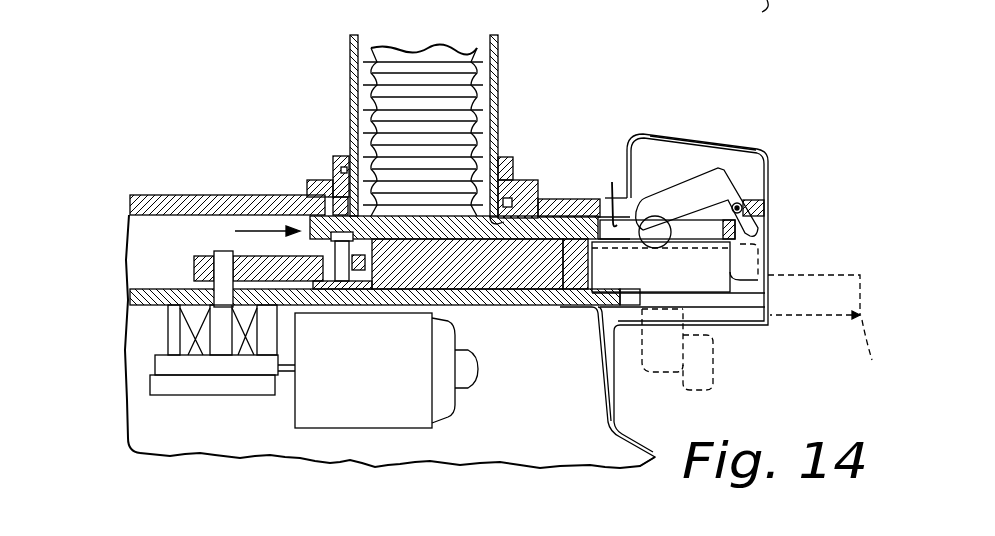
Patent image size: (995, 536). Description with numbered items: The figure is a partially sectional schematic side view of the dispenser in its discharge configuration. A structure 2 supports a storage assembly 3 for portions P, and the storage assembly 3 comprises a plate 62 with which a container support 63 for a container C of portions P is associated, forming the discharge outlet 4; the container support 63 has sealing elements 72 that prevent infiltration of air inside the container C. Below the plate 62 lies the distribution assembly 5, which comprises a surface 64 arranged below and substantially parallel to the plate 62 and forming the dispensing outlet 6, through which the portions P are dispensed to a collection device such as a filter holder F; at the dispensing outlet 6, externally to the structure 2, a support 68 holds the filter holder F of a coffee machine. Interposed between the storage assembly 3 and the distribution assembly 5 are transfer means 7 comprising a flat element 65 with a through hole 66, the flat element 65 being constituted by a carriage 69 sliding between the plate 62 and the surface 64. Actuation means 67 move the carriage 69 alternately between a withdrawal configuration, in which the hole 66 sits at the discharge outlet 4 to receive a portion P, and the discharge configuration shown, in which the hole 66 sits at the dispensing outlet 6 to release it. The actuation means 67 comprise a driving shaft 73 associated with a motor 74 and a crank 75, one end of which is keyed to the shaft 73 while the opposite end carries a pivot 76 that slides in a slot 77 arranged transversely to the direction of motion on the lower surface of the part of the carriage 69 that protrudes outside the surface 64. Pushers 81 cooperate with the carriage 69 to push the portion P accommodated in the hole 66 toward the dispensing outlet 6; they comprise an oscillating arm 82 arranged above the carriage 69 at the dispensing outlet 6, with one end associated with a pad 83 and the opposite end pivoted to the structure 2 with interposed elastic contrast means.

The structure 2 is at (772, 150).
The storage assembly 3 is at (330, 110).
The discharge outlet 4 is at (562, 147).
The distribution assembly 5 is at (772, 260).
The dispensing outlet 6 is at (767, 250).
The transfer means 7 is at (248, 232).
The plate 62 is at (165, 195).
The container support 63 is at (310, 187).
The surface 64 is at (483, 300).
The flat element 65 is at (532, 246).
The through hole 66 is at (612, 190).
The actuation means 67 is at (175, 262).
The support 68 is at (763, 322).
The carriage 69 is at (563, 245).
The sealing elements 72 is at (325, 182).
The driving shaft 73 is at (210, 286).
The motor 74 is at (310, 405).
The crank 75 is at (342, 262).
The pivot 76 is at (310, 270).
The slot 77 is at (380, 275).
The pushers 81 is at (742, 145).
The oscillating arm 82 is at (688, 198).
The pad 83 is at (647, 208).
The portions P is at (365, 62).
The container C is at (506, 74).
The filter holder F is at (833, 340).